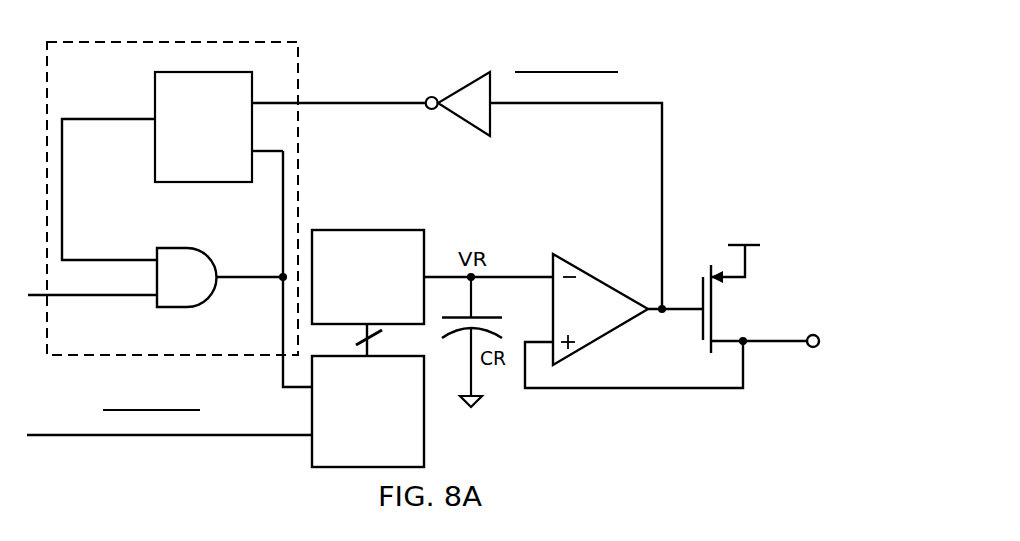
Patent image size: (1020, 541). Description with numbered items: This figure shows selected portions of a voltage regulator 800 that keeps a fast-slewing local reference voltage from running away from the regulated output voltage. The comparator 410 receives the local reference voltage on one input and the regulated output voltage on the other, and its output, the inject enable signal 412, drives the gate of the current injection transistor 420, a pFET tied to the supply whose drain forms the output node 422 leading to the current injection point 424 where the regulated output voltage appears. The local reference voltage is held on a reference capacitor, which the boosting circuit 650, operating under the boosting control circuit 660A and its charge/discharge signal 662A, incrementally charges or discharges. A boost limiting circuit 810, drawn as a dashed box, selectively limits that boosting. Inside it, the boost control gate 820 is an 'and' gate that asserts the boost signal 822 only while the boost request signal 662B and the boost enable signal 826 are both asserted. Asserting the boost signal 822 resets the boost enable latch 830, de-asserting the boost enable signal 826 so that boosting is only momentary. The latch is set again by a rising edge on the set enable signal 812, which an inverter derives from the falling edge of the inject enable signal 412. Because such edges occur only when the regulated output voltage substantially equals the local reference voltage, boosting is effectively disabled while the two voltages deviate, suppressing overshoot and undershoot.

The voltage regulator 800 is at (744, 58).
The boost limiting circuit 810 is at (186, 239).
The set enable signal 812 is at (347, 105).
The boost control gate 820 is at (201, 281).
The boost signal 822 is at (247, 275).
The boost enable signal 826 is at (63, 166).
The boost enable latch 830 is at (220, 174).
The comparator 410 is at (598, 292).
The inject enable signal 412 is at (565, 105).
The current injection transistor 420 is at (702, 290).
The output node 422 is at (764, 338).
The current injection point 424 is at (813, 335).
The boosting circuit 650 is at (385, 314).
The boosting control circuit 660A is at (391, 458).
The charge/discharge signal 662A is at (233, 437).
The boost request signal 662B is at (128, 297).